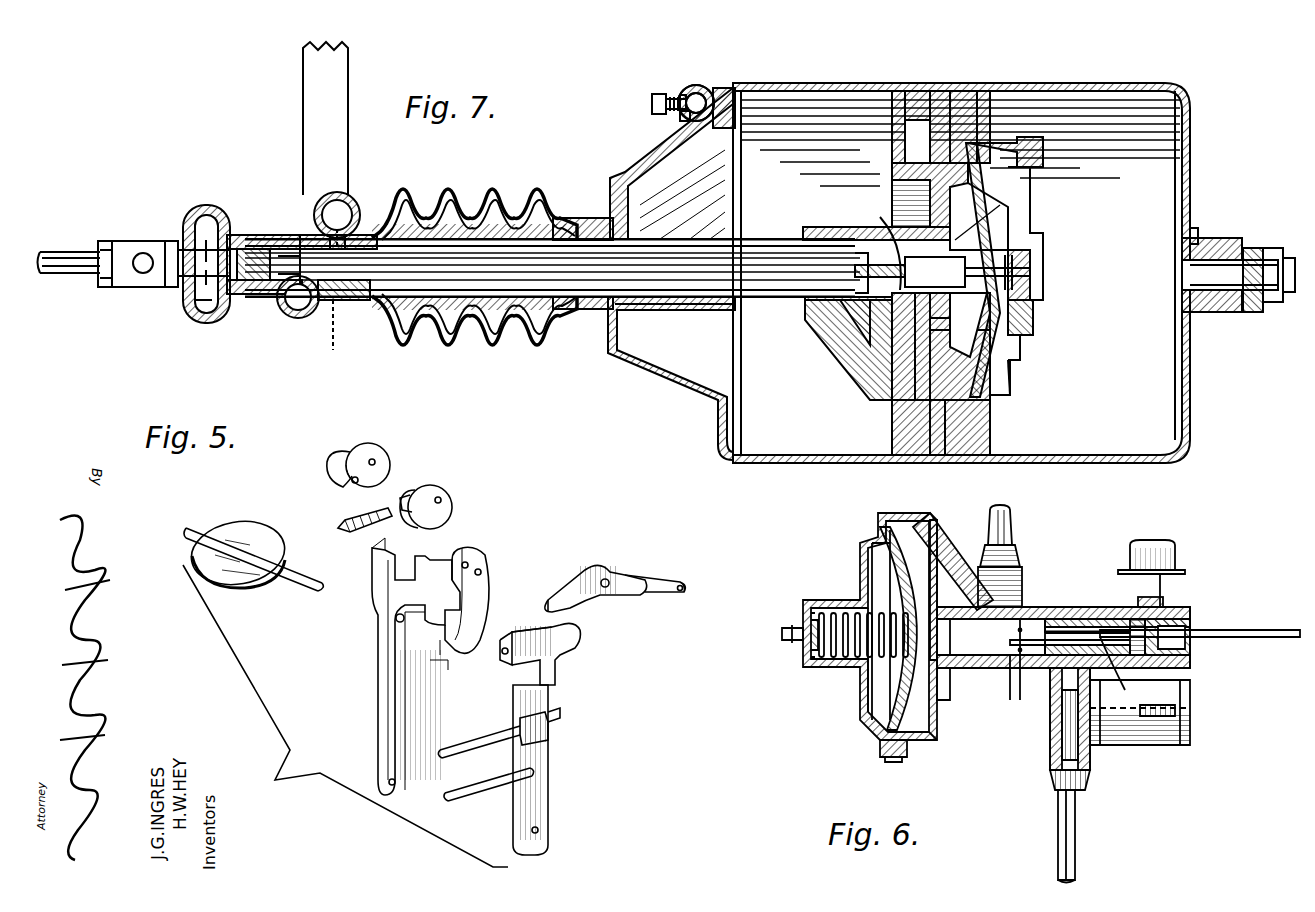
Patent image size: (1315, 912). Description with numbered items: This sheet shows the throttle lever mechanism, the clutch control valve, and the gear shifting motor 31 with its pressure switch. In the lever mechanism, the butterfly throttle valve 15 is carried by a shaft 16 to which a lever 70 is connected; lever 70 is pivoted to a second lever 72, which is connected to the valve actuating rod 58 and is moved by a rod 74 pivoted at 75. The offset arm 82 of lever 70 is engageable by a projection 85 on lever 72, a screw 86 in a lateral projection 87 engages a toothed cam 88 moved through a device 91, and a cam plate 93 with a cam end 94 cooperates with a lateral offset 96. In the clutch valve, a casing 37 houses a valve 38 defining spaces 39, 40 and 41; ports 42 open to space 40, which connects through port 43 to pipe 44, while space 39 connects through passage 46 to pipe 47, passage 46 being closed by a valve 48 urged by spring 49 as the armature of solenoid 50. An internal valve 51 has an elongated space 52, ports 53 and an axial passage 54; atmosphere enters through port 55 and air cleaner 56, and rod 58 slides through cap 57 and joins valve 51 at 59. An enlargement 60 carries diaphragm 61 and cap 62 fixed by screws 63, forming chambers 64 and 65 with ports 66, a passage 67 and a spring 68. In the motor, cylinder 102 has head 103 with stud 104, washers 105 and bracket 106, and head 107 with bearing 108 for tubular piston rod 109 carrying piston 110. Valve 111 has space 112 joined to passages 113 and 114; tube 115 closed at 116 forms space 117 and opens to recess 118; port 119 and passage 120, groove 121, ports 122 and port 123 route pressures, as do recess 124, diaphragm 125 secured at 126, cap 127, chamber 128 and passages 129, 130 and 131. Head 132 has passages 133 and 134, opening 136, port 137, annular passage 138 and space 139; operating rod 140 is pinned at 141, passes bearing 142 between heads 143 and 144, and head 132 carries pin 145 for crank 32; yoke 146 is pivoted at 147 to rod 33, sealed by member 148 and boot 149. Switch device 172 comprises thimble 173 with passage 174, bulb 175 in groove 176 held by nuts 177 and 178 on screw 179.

In FIG. 5, the butterfly throttle valve 15 is at (232, 580).
In FIG. 5, the throttle shaft 16 is at (308, 588).
In FIG. 7, the double-acting fluid pressure motor 31 is at (1070, 84).
In FIG. 7, the crank 32 is at (348, 108).
In FIG. 7, the rod 33 is at (68, 252).
In FIG. 6, the cylindrical casing 37 is at (1002, 658).
In FIG. 6, the valve 38 is at (1080, 627).
In FIG. 6, the space 39 is at (1062, 619).
In FIG. 6, the space 40 is at (1032, 607).
In FIG. 6, the space 41 is at (955, 672).
In FIG. 6, the ports 42 is at (1035, 668).
In FIG. 6, the port 43 is at (1020, 567).
In FIG. 6, the pipe 44 is at (1012, 525).
In FIG. 6, the passage 46 is at (1048, 712).
In FIG. 6, the pipe 47 is at (1075, 843).
In FIG. 6, the valve 48 is at (1052, 735).
In FIG. 6, the spring 49 is at (1190, 712).
In FIG. 6, the solenoid 50 is at (1160, 745).
In FIG. 6, the internal valve 51 is at (1092, 633).
In FIG. 6, the elongated space 52 is at (1135, 619).
In FIG. 6, the ports 53 is at (1105, 592).
In FIG. 6, the axial passage 54 is at (1010, 641).
In FIG. 6, the port 55 is at (1168, 602).
In FIG. 6, the air cleaner 56 is at (1178, 555).
In FIG. 6, the cap 57 is at (1190, 625).
In FIG. 5, the valve actuating rod 58 is at (468, 743).
In FIG. 6, the valve actuating rod 58 is at (1255, 630).
In FIG. 6, the connection 59 is at (1124, 667).
In FIG. 6, the circular enlargement 60 is at (936, 740).
In FIG. 6, the diaphragm 61 is at (892, 762).
In FIG. 6, the cap 62 is at (862, 720).
In FIG. 6, the screws 63 is at (880, 750).
In FIG. 6, the chamber 64 is at (925, 722).
In FIG. 6, the chamber 65 is at (868, 692).
In FIG. 6, the ports 66 is at (872, 635).
In FIG. 6, the passage 67 is at (938, 535).
In FIG. 6, the spring 68 is at (878, 606).
In FIG. 5, the lever 70 is at (372, 672).
In FIG. 5, the lever 72 is at (550, 778).
In FIG. 5, the rod 74 is at (470, 783).
In FIG. 5, the pivot 75 is at (552, 726).
In FIG. 5, the offset arm 82 is at (486, 556).
In FIG. 5, the projection 85 is at (582, 638).
In FIG. 5, the screw 86 is at (400, 494).
In FIG. 5, the lateral projection 87 is at (350, 510).
In FIG. 5, the toothed cam 88 is at (452, 518).
In FIG. 5, the device 91 is at (378, 455).
In FIG. 5, the cam plate 93 is at (610, 568).
In FIG. 5, the cam end 94 is at (546, 606).
In FIG. 5, the lateral offset 96 is at (652, 575).
In FIG. 7, the cylinder 102 is at (1145, 81).
In FIG. 7, the integral head 103 is at (1190, 122).
In FIG. 7, the stud 104 is at (1285, 303).
In FIG. 7, the deformable washers 105 is at (1218, 238).
In FIG. 7, the stationary bracket 106 is at (1248, 240).
In FIG. 7, the head 107 is at (690, 380).
In FIG. 7, the bearing 108 is at (590, 218).
In FIG. 7, the tubular piston rod 109 is at (757, 239).
In FIG. 7, the piston 110 is at (892, 175).
In FIG. 7, the valve 111 is at (888, 240).
In FIG. 7, the elongated space 112 is at (876, 276).
In FIG. 7, the passage 113 is at (865, 385).
In FIG. 7, the passage 114 is at (825, 330).
In FIG. 7, the tube 115 is at (752, 304).
In FIG. 7, the closure member 116 is at (840, 227).
In FIG. 7, the space 117 is at (701, 297).
In FIG. 7, the axial recess 118 is at (935, 271).
In FIG. 7, the port 119 is at (812, 306).
In FIG. 7, the passage 120 is at (846, 340).
In FIG. 7, the annular groove 121 is at (968, 325).
In FIG. 7, the ports 122 is at (935, 278).
In FIG. 7, the port 123 is at (957, 319).
In FIG. 7, the recess 124 is at (1010, 210).
In FIG. 7, the diaphragm 125 is at (1015, 318).
In FIG. 7, the connection 126 is at (1032, 270).
In FIG. 7, the cap 127 is at (1025, 348).
In FIG. 7, the pressure chamber 128 is at (1022, 368).
In FIG. 7, the passage 129 is at (1038, 160).
In FIG. 7, the passage 130 is at (992, 398).
In FIG. 7, the passage 131 is at (1012, 380).
In FIG. 7, the head 132 is at (252, 235).
In FIG. 7, the transverse passage 133 is at (360, 195).
In FIG. 7, the transverse passage 134 is at (285, 312).
In FIG. 7, the axial opening 136 is at (305, 215).
In FIG. 7, the port 137 is at (365, 225).
In FIG. 7, the annular passage 138 is at (343, 300).
In FIG. 7, the space 139 is at (282, 235).
In FIG. 7, the valve operating rod 140 is at (703, 253).
In FIG. 7, the pin 141 is at (892, 200).
In FIG. 7, the bearing 142 is at (232, 233).
In FIG. 7, the head 143 is at (252, 294).
In FIG. 7, the head 144 is at (194, 210).
In FIG. 7, the integral pin 145 is at (326, 329).
In FIG. 7, the yoke 146 is at (172, 288).
In FIG. 7, the pivot 147 is at (143, 253).
In FIG. 7, the sealing member 148 is at (204, 322).
In FIG. 7, the boot 149 is at (498, 184).
In FIG. 7, the switch device 172 is at (690, 85).
In FIG. 7, the thimble 173 is at (722, 88).
In FIG. 7, the passage 174 is at (690, 133).
In FIG. 7, the deformable bulb 175 is at (684, 122).
In FIG. 7, the groove 176 is at (708, 90).
In FIG. 7, the nut 177 is at (682, 95).
In FIG. 7, the nut 178 is at (708, 85).
In FIG. 7, the screw 179 is at (652, 104).